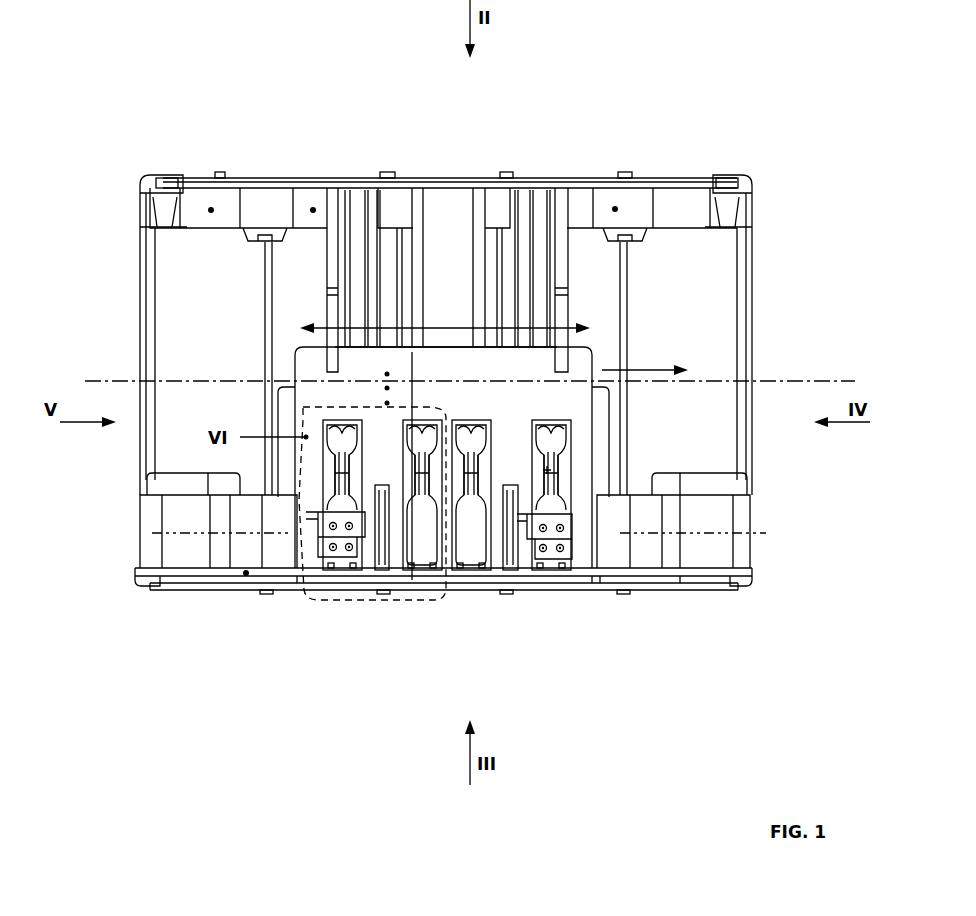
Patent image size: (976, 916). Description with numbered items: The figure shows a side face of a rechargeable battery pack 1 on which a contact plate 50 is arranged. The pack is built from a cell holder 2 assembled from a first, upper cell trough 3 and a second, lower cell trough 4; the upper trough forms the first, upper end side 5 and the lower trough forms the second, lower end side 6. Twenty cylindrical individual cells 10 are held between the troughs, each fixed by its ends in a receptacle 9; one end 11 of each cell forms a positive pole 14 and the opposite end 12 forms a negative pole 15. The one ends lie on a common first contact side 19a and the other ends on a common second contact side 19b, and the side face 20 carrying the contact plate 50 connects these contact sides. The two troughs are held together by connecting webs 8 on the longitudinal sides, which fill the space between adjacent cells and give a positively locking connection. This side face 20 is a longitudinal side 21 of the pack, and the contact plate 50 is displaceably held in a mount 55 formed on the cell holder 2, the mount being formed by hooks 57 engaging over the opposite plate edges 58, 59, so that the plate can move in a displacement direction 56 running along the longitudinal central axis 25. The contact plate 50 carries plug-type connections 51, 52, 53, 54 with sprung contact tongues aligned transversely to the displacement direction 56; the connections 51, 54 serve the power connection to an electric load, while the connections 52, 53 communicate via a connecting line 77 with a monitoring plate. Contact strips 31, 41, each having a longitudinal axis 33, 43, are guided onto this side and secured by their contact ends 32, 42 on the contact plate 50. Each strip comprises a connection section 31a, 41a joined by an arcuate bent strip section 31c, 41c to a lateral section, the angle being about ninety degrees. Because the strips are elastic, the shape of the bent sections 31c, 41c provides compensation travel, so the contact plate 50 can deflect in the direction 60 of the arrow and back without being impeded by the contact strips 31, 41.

The rechargeable battery pack 1 is at (213, 136).
The cell holder 2 is at (569, 163).
The first, upper cell trough 3 is at (327, 186).
The second, lower cell trough 4 is at (623, 591).
The first, upper end side 5 is at (658, 172).
The second, lower end side 6 is at (338, 594).
The connecting web 8 is at (462, 296).
The receptacle 9 is at (312, 208).
The individual cell 10 is at (215, 337).
The one end of the individual cell 11 is at (145, 170).
The other end of the individual cell 12 is at (755, 583).
The positive pole 14 is at (172, 170).
The negative pole 15 is at (713, 582).
The first contact side 19a is at (348, 192).
The second contact side 19b is at (548, 592).
The side face 20 is at (182, 285).
The longitudinal side 21 is at (201, 344).
The longitudinal central axis 25 is at (824, 380).
The contact strip 31 is at (172, 569).
The connection section 31a is at (232, 547).
The bent strip section 31c is at (146, 549).
The contact end 32 is at (348, 550).
The longitudinal axis 33 is at (212, 547).
The contact strip 41 is at (737, 583).
The connection section 41a is at (700, 557).
The bent strip section 41c is at (752, 546).
The contact end 42 is at (562, 551).
The longitudinal axis 43 is at (675, 557).
The contact plate 50 is at (490, 412).
The plug-type connection 51 is at (331, 524).
The plug-type connection 52 is at (424, 486).
The plug-type connection 53 is at (467, 488).
The plug-type connection 54 is at (593, 583).
The mount 55 is at (512, 474).
The displacement direction 56 is at (447, 327).
The hook 57 is at (384, 540).
The plate edge 58 is at (510, 506).
The plate edge 59 is at (564, 384).
The direction of the arrow 60 is at (640, 370).
The connecting line 77 is at (385, 374).